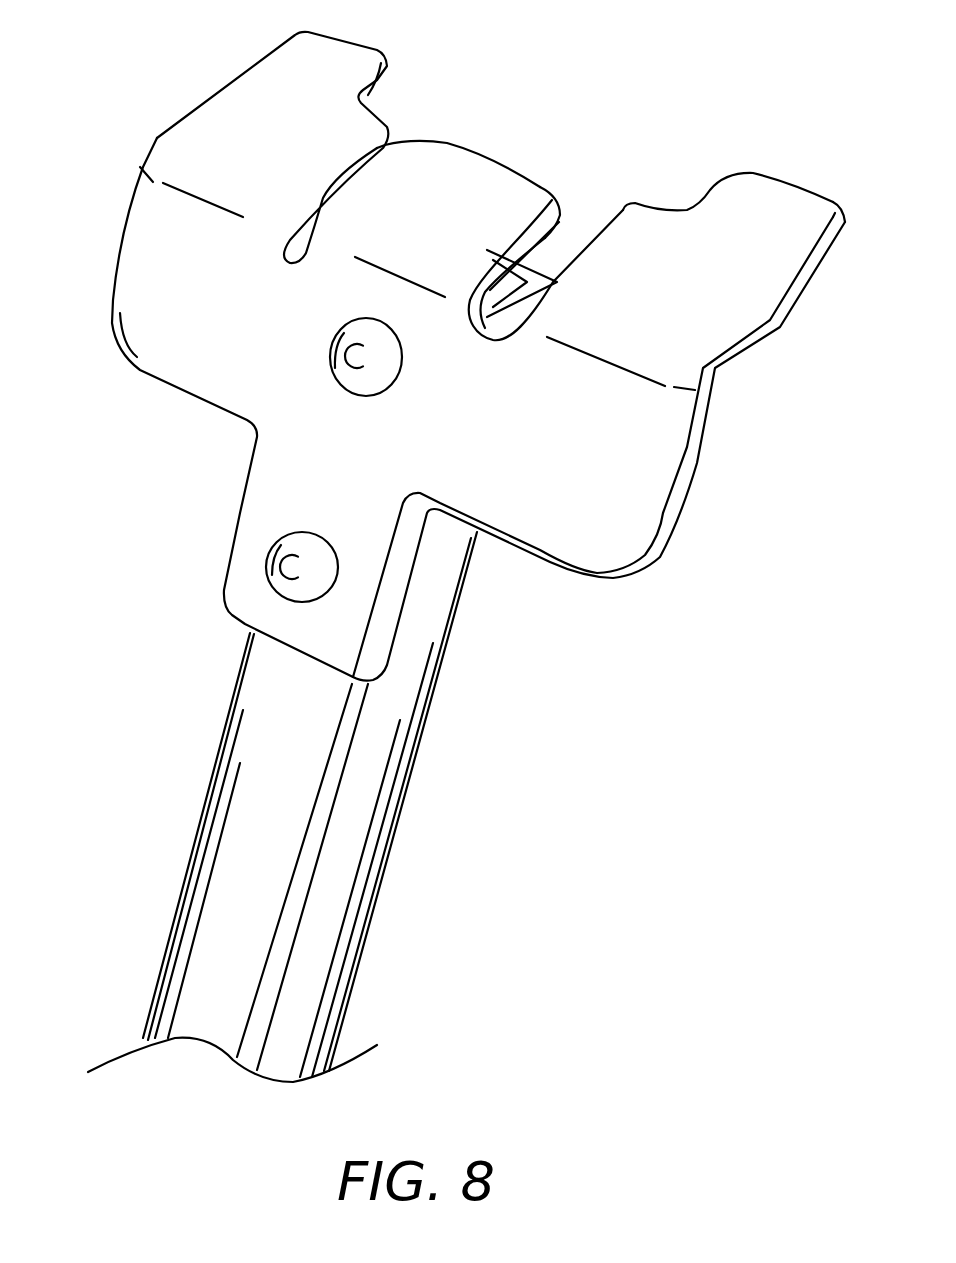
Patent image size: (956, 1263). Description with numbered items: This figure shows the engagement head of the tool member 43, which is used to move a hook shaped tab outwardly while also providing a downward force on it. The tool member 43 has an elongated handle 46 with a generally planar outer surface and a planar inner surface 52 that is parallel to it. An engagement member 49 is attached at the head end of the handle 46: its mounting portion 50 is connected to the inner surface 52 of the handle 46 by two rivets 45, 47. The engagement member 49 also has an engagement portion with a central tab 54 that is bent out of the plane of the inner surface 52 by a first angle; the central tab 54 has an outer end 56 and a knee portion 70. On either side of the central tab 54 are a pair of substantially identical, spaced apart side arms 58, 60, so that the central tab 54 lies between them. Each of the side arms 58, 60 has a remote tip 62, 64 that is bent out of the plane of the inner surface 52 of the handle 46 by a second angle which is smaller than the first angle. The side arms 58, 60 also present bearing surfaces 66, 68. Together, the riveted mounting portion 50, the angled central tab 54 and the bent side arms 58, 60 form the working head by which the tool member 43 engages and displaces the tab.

The tool member 43 is at (448, 544).
The rivet 45 is at (322, 533).
The elongated handle 46 is at (210, 780).
The rivet 47 is at (330, 343).
The engagement member 49 is at (107, 310).
The mounting portion 50 is at (242, 513).
The inner surface 52 is at (282, 807).
The central tab 54 is at (447, 150).
The outer end 56 is at (513, 163).
The side arm 58 is at (157, 142).
The side arm 60 is at (693, 447).
The remote tip 62 is at (790, 182).
The remote tip 64 is at (343, 37).
The bearing surface 66 is at (272, 147).
The bearing surface 68 is at (728, 237).
The knee portion 70 is at (500, 242).